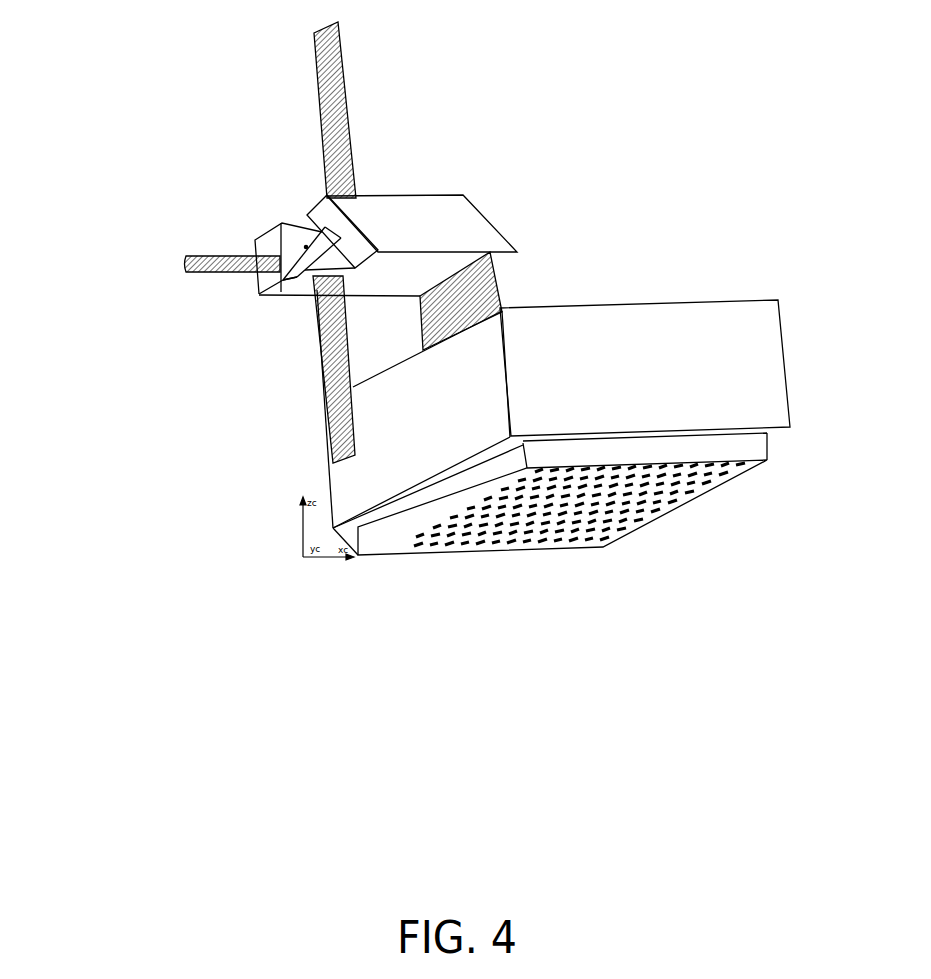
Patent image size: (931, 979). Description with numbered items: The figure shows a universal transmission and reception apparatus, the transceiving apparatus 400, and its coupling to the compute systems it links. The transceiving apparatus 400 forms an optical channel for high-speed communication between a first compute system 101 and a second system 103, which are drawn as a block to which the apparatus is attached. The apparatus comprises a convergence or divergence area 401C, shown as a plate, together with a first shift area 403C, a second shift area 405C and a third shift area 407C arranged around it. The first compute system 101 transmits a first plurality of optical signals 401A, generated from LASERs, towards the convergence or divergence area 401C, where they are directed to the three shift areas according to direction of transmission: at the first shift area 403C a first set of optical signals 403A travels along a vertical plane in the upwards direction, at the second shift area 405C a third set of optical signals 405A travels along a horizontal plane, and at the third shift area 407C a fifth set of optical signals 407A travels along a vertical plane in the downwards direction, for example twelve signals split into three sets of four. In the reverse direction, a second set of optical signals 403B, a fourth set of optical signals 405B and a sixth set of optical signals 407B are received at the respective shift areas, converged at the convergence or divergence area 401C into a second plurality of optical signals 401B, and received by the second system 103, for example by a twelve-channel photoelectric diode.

The transceiving apparatus 400 is at (366, 239).
The first plurality of optical signals 401A is at (479, 317).
The second plurality of optical signals 401B is at (500, 290).
The convergence or divergence area 401C is at (500, 232).
The first set of optical signals 403A is at (432, 107).
The second set of optical signals 403B is at (350, 58).
The first shift area 403C is at (327, 196).
The third set of optical signals 405A is at (156, 237).
The fourth set of optical signals 405B is at (194, 265).
The second shift area 405C is at (283, 225).
The fifth set of optical signals 407A is at (238, 369).
The sixth set of optical signals 407B is at (318, 377).
The third shift area 407C is at (300, 278).
The first compute system 101 is at (588, 395).
The second system 103 is at (732, 328).